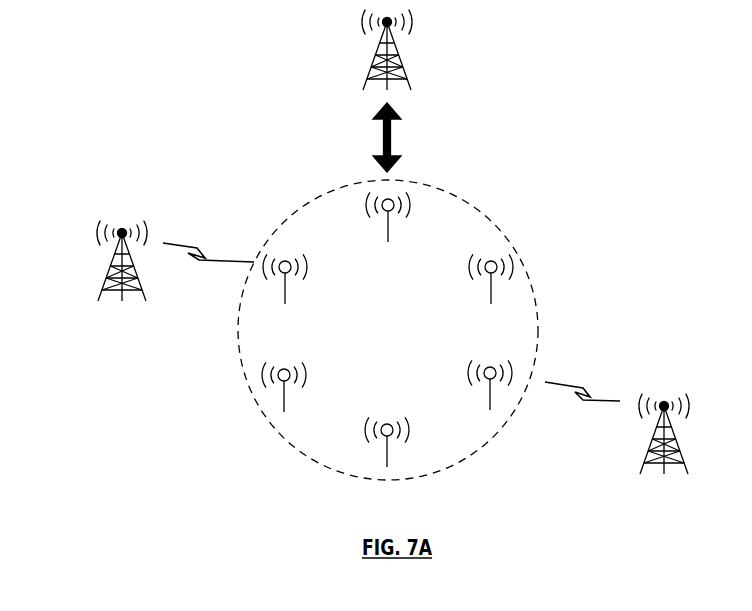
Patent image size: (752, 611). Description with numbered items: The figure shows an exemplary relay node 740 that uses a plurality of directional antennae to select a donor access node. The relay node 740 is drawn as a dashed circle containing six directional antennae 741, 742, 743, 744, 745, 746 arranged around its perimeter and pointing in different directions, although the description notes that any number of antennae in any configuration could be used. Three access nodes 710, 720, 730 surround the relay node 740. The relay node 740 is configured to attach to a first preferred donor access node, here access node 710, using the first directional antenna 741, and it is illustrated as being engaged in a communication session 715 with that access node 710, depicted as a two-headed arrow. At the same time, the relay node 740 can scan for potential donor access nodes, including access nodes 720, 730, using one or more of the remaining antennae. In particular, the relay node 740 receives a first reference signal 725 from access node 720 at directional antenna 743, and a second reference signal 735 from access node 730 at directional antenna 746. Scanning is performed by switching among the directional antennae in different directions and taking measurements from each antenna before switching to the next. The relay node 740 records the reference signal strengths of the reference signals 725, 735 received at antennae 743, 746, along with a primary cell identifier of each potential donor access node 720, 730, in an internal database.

The access node 710 is at (372, 72).
The communication session 715 is at (397, 137).
The access node 720 is at (650, 456).
The first reference signal 725 is at (598, 393).
The access node 730 is at (108, 281).
The second reference signal 735 is at (196, 247).
The relay node 740 is at (404, 348).
The first directional antenna 741 is at (389, 228).
The directional antenna 742 is at (492, 288).
The directional antenna 743 is at (489, 398).
The directional antenna 744 is at (387, 455).
The directional antenna 745 is at (285, 398).
The directional antenna 746 is at (285, 292).